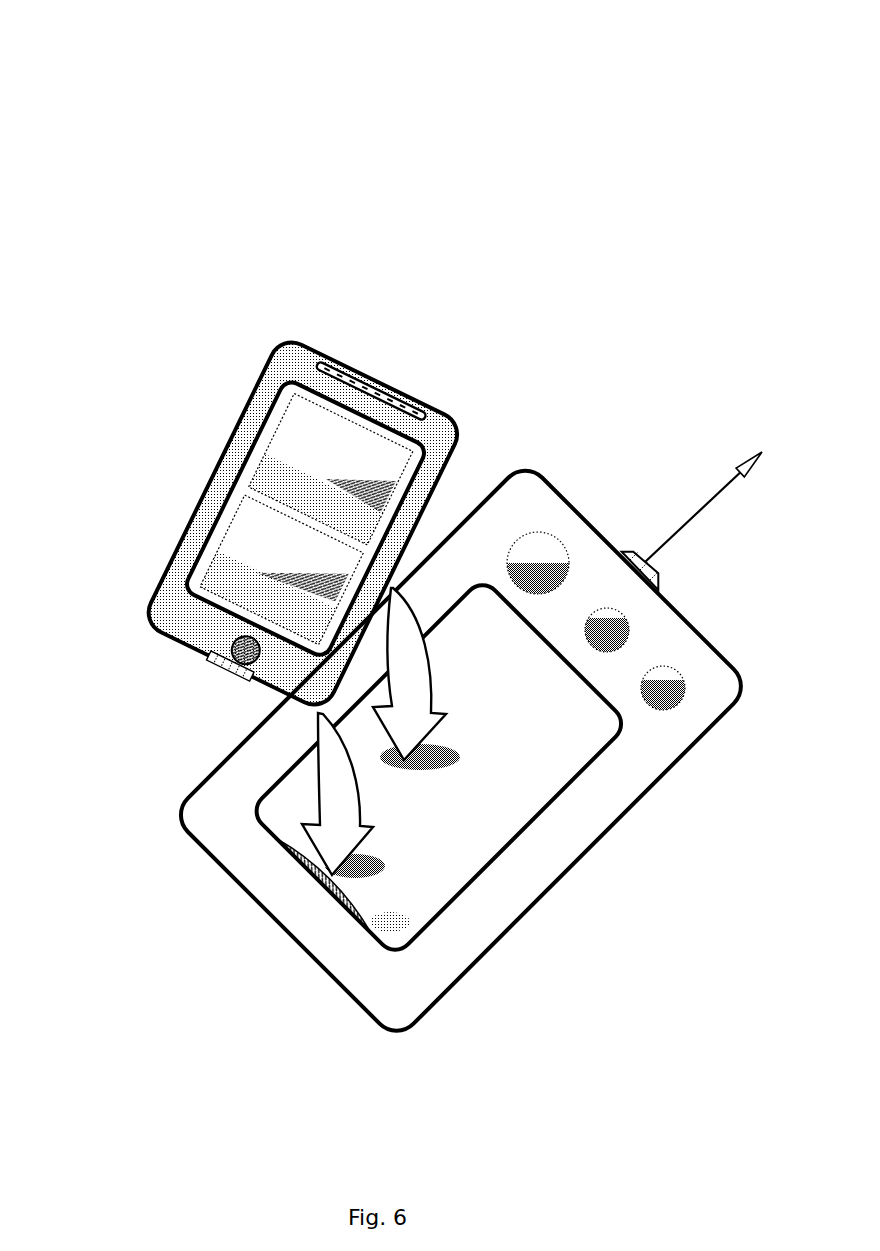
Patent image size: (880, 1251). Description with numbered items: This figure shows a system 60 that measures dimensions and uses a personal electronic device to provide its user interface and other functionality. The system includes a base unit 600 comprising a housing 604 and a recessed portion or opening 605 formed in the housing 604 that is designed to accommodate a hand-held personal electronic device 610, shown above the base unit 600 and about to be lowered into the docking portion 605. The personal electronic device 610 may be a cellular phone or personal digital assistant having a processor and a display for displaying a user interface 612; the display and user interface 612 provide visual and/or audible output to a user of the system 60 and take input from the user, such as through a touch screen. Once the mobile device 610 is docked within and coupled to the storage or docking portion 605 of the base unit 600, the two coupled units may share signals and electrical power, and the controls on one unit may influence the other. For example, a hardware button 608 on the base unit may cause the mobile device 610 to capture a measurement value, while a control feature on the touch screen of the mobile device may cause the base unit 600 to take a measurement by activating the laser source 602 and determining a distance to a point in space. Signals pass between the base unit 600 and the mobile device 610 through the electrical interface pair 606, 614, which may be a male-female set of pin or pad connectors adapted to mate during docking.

The system 60 is at (128, 93).
The base unit 600 is at (570, 450).
The laser source 602 is at (648, 545).
The housing 604 is at (557, 839).
The recessed portion or opening 605 is at (455, 854).
The electrical interface 606 is at (320, 882).
The hardware button 608 is at (690, 708).
The personal electronic device 610 is at (333, 352).
The display and user interface 612 is at (257, 453).
The electrical interface 614 is at (215, 662).